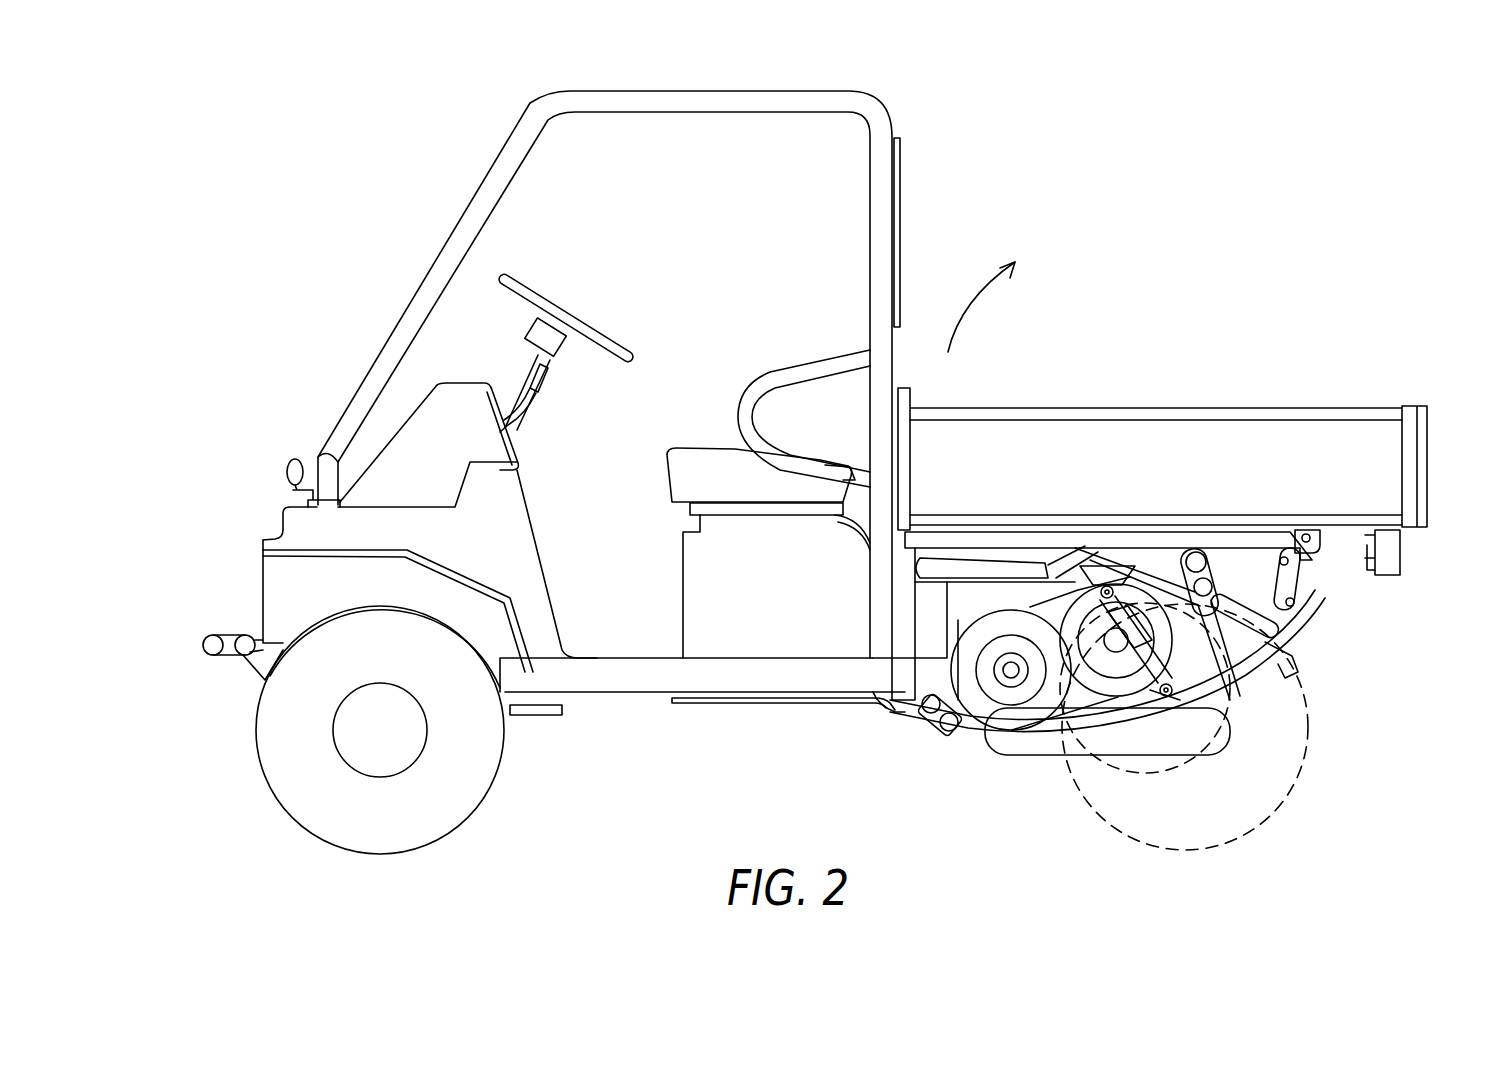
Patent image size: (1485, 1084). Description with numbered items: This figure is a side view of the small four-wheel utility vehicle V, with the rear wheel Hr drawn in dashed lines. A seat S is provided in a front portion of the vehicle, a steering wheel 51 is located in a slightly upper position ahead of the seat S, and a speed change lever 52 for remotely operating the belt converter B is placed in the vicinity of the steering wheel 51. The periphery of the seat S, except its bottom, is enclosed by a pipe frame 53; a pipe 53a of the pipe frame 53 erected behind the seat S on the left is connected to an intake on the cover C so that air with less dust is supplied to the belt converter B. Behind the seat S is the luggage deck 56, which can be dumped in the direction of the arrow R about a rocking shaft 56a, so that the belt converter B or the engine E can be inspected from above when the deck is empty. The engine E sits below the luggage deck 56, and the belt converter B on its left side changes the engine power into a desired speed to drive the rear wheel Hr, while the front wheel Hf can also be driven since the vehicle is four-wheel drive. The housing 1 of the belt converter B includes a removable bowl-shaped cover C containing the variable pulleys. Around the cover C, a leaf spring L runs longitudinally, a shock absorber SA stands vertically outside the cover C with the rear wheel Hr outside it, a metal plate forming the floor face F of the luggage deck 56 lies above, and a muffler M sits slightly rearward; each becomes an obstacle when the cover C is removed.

The small four-wheel utility vehicle V is at (412, 198).
The pipe frame 53 is at (652, 100).
The pipe 53a is at (872, 270).
The steering wheel 51 is at (528, 292).
The speed change lever 52 is at (548, 375).
The seat S is at (677, 475).
The arrow R is at (975, 300).
The luggage deck 56 is at (1222, 408).
The rocking shaft 56a is at (1306, 533).
The floor face F is at (1222, 530).
The engine E is at (985, 632).
The housing 1 is at (983, 702).
The cover C is at (1013, 675).
The belt converter B is at (1023, 705).
The shock absorber SA is at (1140, 643).
The muffler M is at (1273, 615).
The leaf spring L is at (1250, 665).
The front wheel Hf is at (462, 793).
The rear wheel Hr is at (1272, 778).